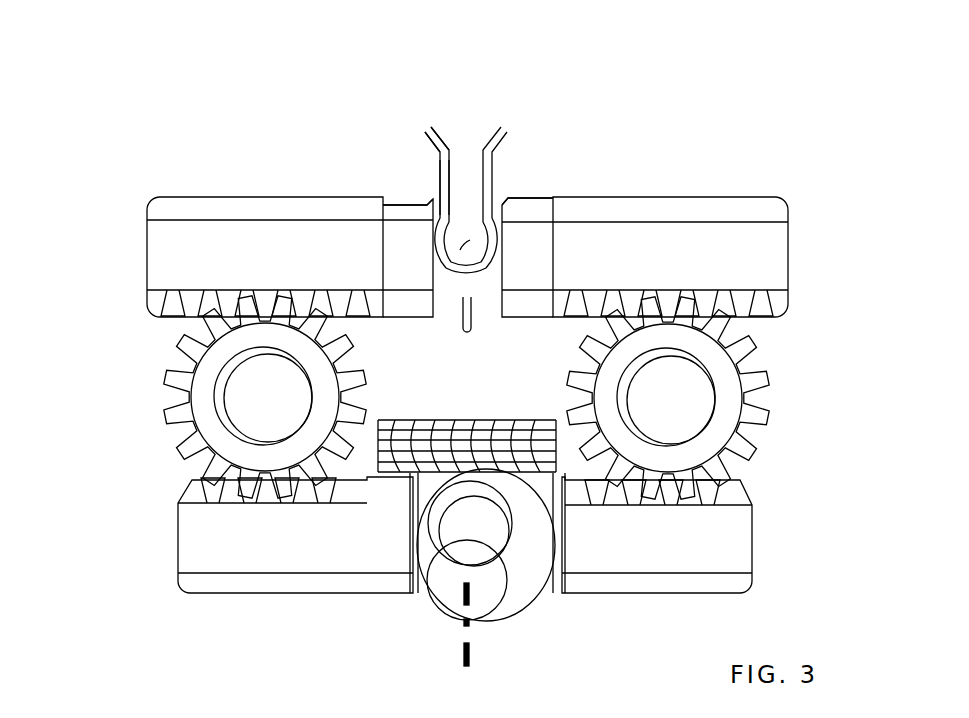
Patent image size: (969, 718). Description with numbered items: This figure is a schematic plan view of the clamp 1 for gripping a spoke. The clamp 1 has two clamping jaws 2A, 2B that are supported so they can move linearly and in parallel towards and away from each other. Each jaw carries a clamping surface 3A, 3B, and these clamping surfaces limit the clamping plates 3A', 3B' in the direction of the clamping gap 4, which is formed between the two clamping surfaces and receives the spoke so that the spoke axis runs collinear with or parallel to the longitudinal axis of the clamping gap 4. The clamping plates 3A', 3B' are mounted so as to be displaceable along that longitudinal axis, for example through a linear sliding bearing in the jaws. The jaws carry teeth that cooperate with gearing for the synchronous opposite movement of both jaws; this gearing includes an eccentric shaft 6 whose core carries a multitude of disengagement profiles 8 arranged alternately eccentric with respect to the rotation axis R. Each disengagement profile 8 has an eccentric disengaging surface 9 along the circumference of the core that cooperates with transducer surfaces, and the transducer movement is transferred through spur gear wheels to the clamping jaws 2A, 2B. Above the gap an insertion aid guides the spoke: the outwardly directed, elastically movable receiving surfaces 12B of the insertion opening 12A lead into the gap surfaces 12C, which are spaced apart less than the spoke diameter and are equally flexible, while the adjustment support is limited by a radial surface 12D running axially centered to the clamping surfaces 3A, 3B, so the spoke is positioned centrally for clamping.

The clamp 1 is at (331, 55).
The clamping jaw 2A is at (170, 252).
The clamping jaw 2B is at (692, 207).
The clamping surface 3A is at (400, 188).
The clamping plate 3A' is at (365, 158).
The clamping surface 3B is at (553, 134).
The clamping plate 3B' is at (528, 180).
The clamping gap 4 is at (463, 230).
The eccentric shaft 6 is at (487, 591).
The disengagement profile 8 is at (537, 522).
The eccentric disengaging surface 9 is at (508, 468).
The insertion opening 12A is at (478, 137).
The receiving surface 12B is at (441, 150).
The gap surface 12C is at (455, 150).
The radial surface 12D is at (488, 287).
The rotation axis R is at (461, 652).